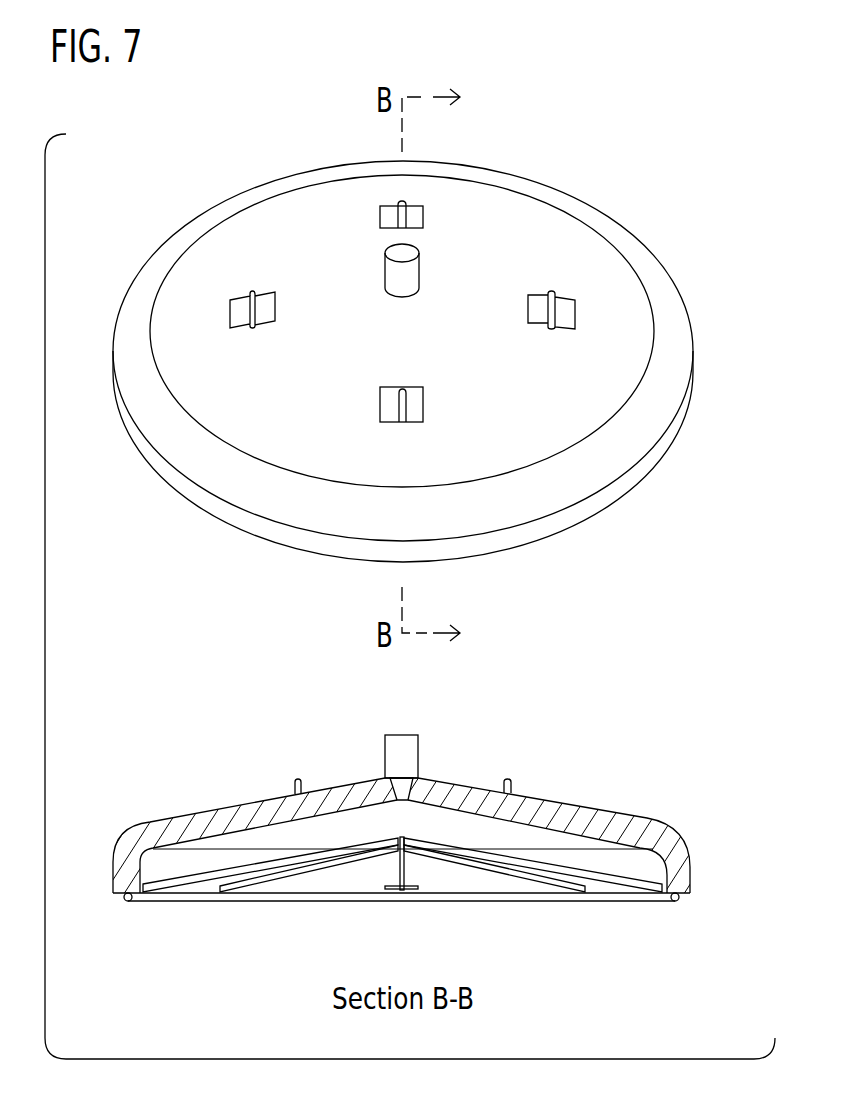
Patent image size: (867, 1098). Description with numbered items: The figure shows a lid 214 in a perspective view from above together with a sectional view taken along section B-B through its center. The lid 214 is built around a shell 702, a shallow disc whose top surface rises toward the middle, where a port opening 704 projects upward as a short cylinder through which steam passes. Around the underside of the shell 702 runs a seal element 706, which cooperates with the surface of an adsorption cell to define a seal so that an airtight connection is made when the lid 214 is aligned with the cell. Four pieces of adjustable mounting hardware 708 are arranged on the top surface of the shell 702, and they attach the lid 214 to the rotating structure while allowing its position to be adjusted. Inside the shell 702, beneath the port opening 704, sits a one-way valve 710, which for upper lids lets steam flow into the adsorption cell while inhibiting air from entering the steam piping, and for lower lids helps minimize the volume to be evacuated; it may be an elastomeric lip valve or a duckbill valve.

The lid 214 is at (477, 198).
The shell 702 is at (540, 243).
The port opening 704 is at (396, 272).
The seal element 706 is at (128, 903).
The adjustable mounting hardware 708 is at (575, 311).
The one-way valve 710 is at (293, 867).